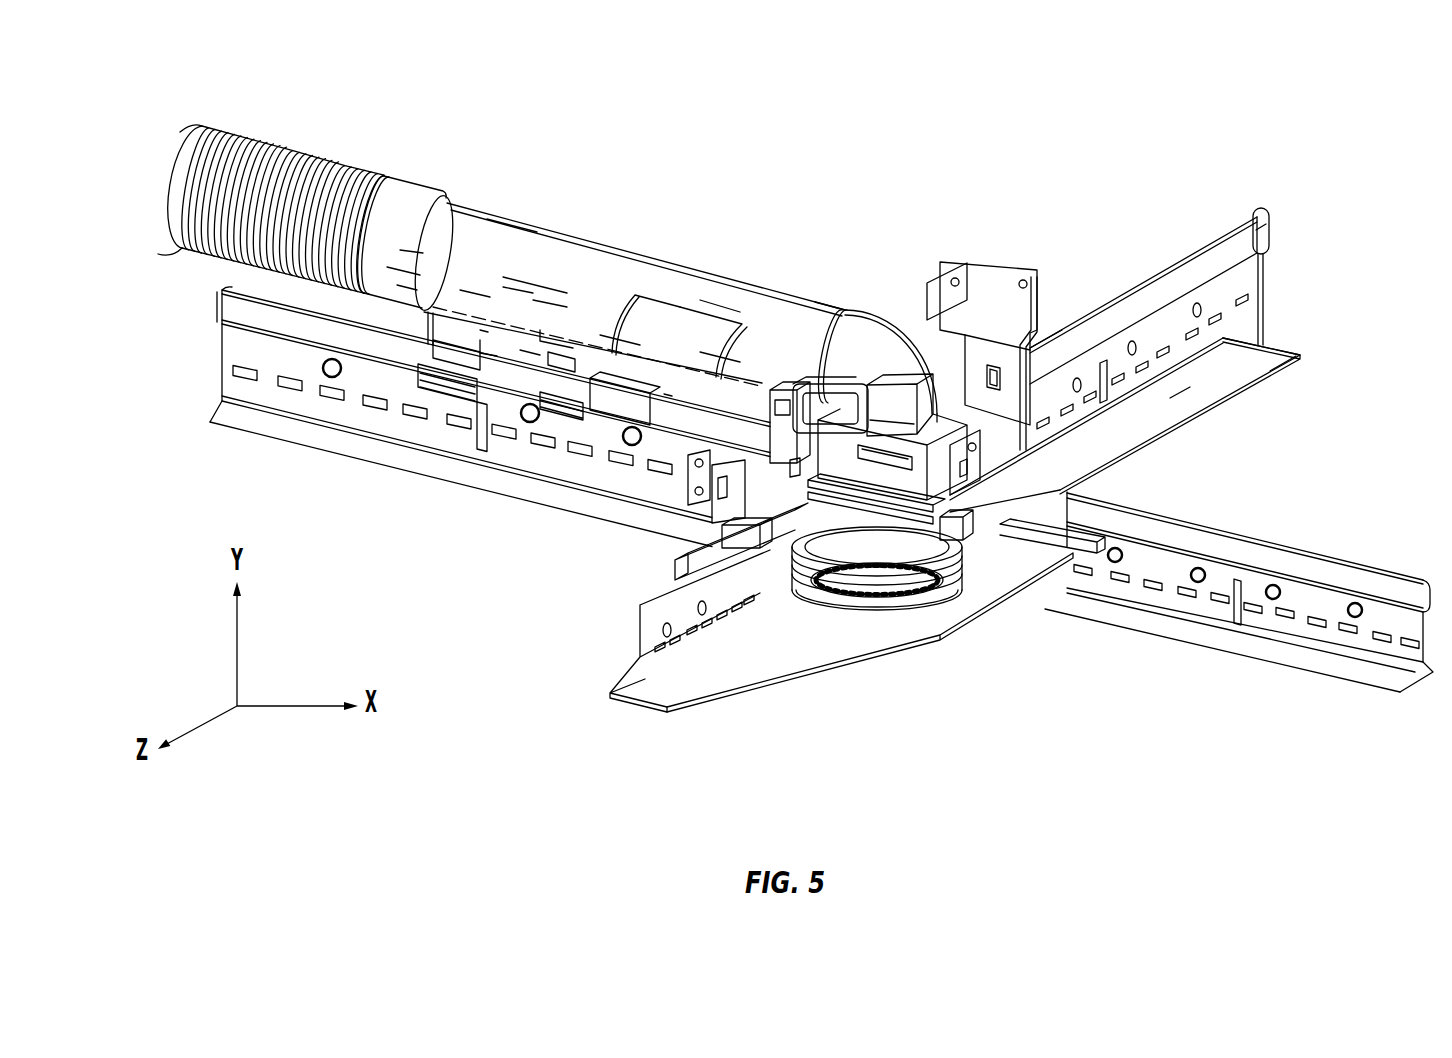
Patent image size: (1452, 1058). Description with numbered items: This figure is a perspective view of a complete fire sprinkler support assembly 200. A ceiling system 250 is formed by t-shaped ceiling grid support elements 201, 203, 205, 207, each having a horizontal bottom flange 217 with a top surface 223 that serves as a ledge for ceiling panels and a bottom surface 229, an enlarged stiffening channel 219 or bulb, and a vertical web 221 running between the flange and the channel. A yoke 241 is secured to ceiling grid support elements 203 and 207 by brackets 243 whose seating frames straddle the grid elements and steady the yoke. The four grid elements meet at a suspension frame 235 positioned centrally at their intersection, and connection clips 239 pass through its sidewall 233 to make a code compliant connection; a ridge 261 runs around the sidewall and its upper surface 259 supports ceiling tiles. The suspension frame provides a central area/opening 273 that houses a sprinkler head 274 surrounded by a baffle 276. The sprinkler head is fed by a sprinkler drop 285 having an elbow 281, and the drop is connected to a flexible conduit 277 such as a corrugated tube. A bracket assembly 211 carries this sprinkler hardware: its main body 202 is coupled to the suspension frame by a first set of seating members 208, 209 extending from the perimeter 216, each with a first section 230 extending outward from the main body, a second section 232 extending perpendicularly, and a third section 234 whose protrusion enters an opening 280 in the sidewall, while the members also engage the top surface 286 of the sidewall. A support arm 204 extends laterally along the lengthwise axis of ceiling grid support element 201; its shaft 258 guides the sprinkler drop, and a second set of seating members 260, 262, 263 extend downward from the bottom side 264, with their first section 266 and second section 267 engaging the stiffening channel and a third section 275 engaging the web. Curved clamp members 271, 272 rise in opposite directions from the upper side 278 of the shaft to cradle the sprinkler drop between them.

The sprinkler support assembly 200 is at (680, 88).
The ceiling grid support element 201 is at (322, 460).
The main body 202 is at (900, 396).
The ceiling grid support element 203 is at (698, 705).
The support arm 204 is at (565, 372).
The ceiling grid support element 205 is at (1298, 689).
The ceiling grid support element 207 is at (1250, 407).
The seating member 208 is at (783, 396).
The seating member 209 is at (1020, 292).
The bracket assembly 211 is at (942, 340).
The perimeter 216 is at (1030, 333).
The bottom flange 217 is at (1184, 402).
The stiffening channel 219 is at (1268, 212).
The vertical web 221 is at (1267, 287).
The top surface 223 is at (1290, 342).
The bottom surface 229 is at (1282, 362).
The first section 230 is at (842, 450).
The second section 232 is at (813, 440).
The sidewall 233 is at (838, 470).
The third section 234 is at (797, 464).
The suspension frame 235 is at (1068, 506).
The connection clips 239 is at (677, 565).
The yoke 241 is at (903, 363).
The brackets 243 is at (1042, 335).
The ceiling system 250 is at (1124, 210).
The shaft 258 is at (607, 392).
The upper surface 259 is at (1065, 538).
The seating member 260 is at (437, 382).
The ridge 261 is at (527, 345).
The seating member 262 is at (610, 419).
The seating member 263 is at (719, 322).
The bottom side 264 is at (655, 455).
The first section 266 is at (458, 358).
The second section 267 is at (484, 330).
The clamp member 271 is at (435, 292).
The clamp member 272 is at (724, 326).
The central area/opening 273 is at (962, 612).
The sprinkler head 274 is at (892, 592).
The third section 275 is at (574, 446).
The baffle 276 is at (816, 605).
The flexible conduit 277 is at (283, 158).
The upper side 278 is at (588, 350).
The opening 280 is at (904, 575).
The elbow 281 is at (871, 340).
The sprinkler drop 285 is at (833, 350).
The top surface 286 is at (829, 293).